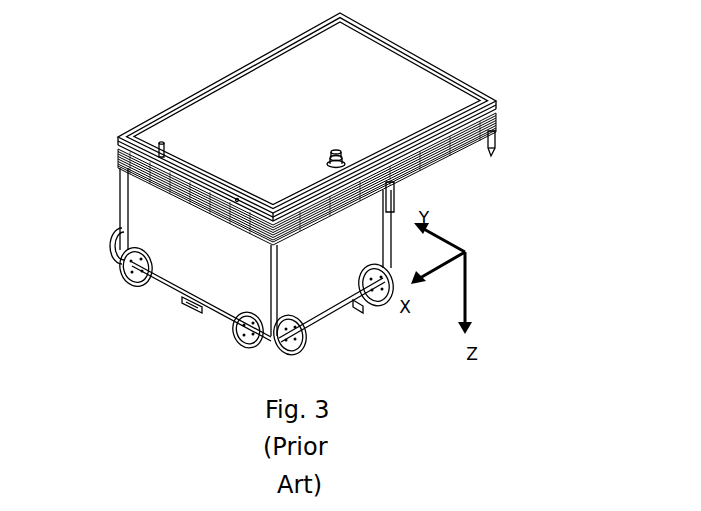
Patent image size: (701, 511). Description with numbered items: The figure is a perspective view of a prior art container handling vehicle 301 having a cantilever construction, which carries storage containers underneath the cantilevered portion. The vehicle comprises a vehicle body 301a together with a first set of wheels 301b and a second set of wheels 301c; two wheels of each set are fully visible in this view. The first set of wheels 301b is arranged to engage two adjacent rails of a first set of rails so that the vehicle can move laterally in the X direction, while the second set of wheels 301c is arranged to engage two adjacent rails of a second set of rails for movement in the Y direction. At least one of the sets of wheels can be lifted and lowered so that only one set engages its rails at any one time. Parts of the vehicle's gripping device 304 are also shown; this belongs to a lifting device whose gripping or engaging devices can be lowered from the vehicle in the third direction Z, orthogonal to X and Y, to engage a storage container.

The container handling vehicle 301 is at (302, 220).
The vehicle body 301a is at (118, 152).
The first set of wheels 301b is at (355, 326).
The second set of wheels 301c is at (156, 313).
The gripping device 304 is at (504, 155).